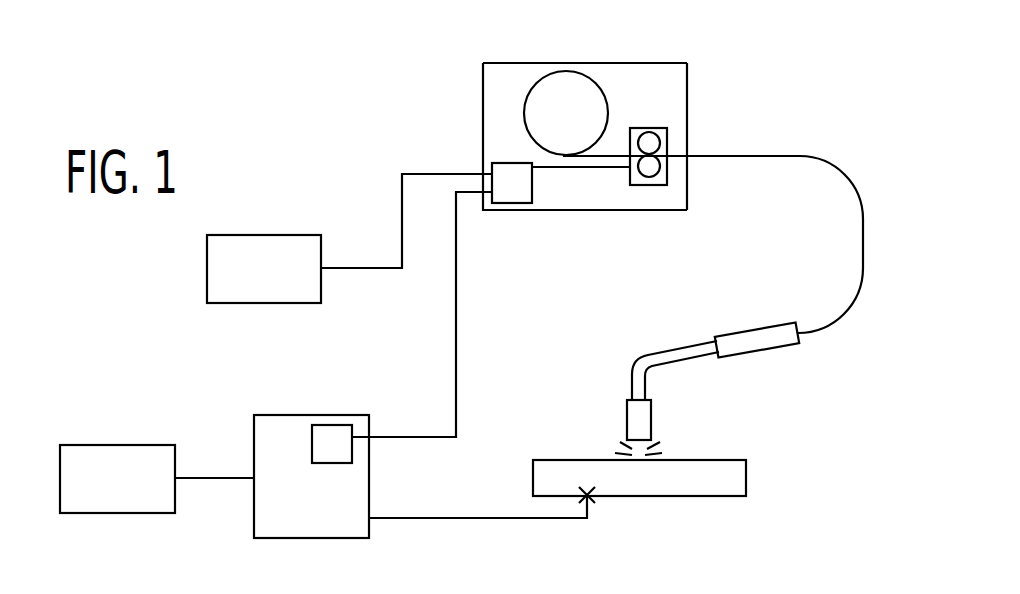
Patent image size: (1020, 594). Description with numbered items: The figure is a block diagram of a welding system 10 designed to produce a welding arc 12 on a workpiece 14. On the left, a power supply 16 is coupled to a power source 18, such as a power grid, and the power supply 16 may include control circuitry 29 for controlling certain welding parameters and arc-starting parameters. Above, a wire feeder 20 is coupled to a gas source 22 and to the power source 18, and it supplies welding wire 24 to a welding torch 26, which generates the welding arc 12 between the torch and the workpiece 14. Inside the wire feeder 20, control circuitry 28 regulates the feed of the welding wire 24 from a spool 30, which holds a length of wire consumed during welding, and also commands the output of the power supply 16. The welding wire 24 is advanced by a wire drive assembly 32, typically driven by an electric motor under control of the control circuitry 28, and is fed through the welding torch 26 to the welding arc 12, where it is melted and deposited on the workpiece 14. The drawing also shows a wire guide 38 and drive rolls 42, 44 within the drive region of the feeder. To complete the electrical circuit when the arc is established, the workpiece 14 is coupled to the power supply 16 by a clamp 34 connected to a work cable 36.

The welding system 10 is at (795, 79).
The welding arc 12 is at (628, 440).
The workpiece 14 is at (747, 480).
The power supply 16 is at (307, 415).
The power source 18 is at (113, 445).
The wire feeder 20 is at (587, 63).
The gas source 22 is at (258, 235).
The welding wire 24 is at (687, 137).
The welding torch 26 is at (755, 330).
The control circuitry 28 is at (532, 188).
The control circuitry 29 is at (333, 425).
The spool 30 is at (537, 83).
The wire drive assembly 32 is at (659, 183).
The clamp 34 is at (593, 503).
The work cable 36 is at (480, 518).
The welding wire 38 is at (636, 186).
The lower drive roll 42 is at (648, 178).
The upper drive roll 44 is at (648, 130).